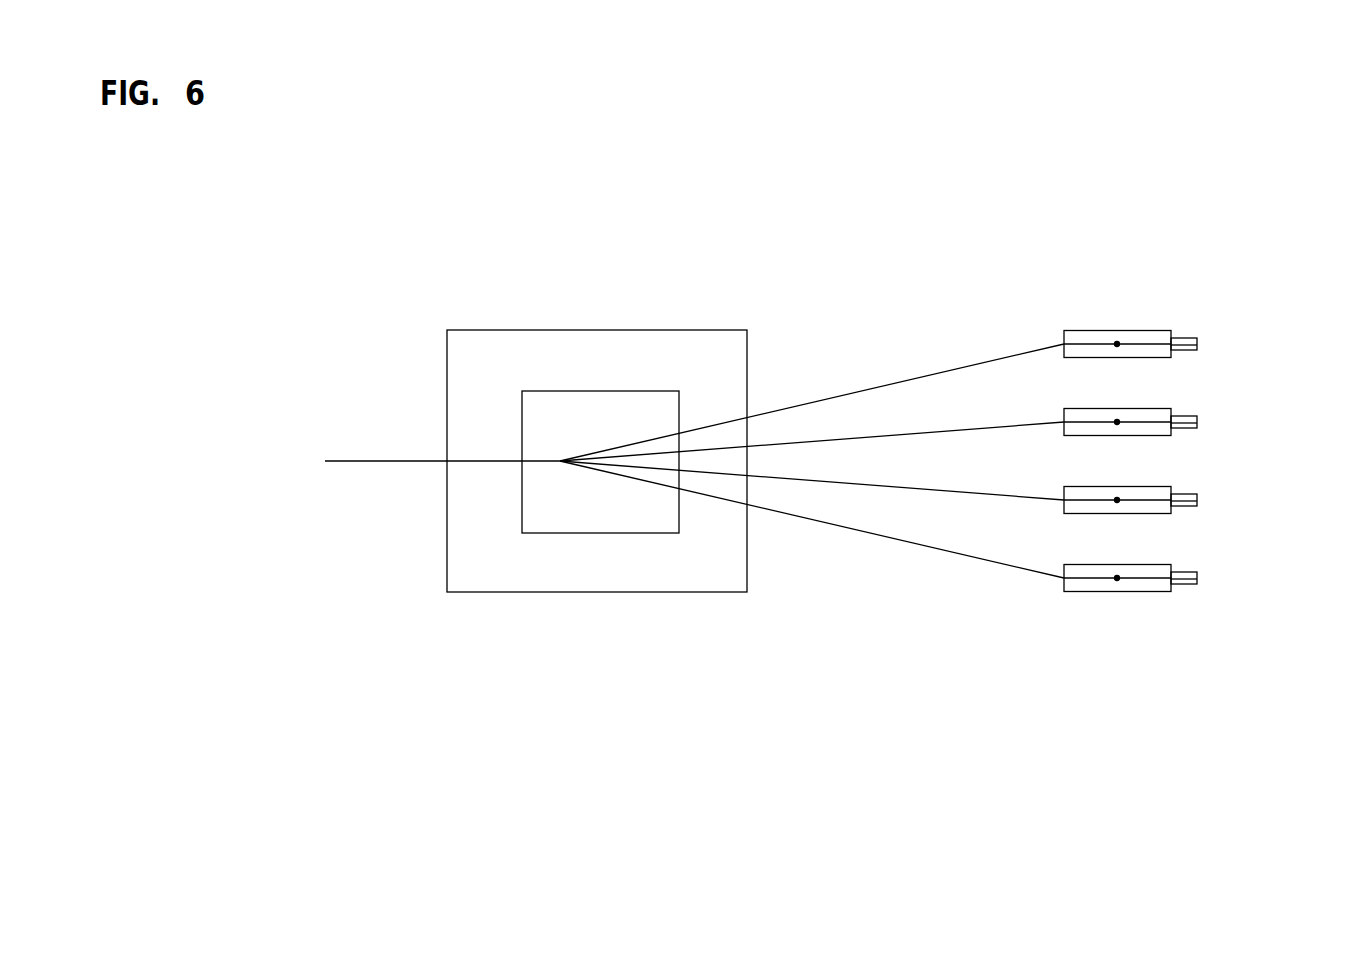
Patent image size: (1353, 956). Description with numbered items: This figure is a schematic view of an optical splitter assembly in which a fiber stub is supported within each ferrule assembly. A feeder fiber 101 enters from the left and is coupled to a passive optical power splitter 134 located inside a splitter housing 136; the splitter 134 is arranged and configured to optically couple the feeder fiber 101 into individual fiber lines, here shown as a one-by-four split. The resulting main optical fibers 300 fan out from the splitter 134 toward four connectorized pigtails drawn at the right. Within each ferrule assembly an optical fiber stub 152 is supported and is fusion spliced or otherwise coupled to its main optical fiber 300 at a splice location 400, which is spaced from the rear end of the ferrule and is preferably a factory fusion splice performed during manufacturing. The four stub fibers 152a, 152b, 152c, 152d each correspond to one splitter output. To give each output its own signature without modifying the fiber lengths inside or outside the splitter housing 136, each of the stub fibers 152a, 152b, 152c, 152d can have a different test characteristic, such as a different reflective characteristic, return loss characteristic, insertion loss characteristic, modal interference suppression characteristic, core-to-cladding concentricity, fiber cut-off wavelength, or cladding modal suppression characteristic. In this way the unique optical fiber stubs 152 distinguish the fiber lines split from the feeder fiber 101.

The feeder fiber 101 is at (378, 461).
The passive optical power splitter 134 is at (565, 392).
The splitter housing 136 is at (595, 533).
The main optical fibers 300 is at (867, 391).
The splice location 400 is at (1117, 344).
The optical fiber stub 152 is at (1167, 491).
The stub fiber 152a is at (1160, 344).
The stub fiber 152b is at (1160, 422).
The stub fiber 152c is at (1160, 500).
The stub fiber 152d is at (1140, 578).